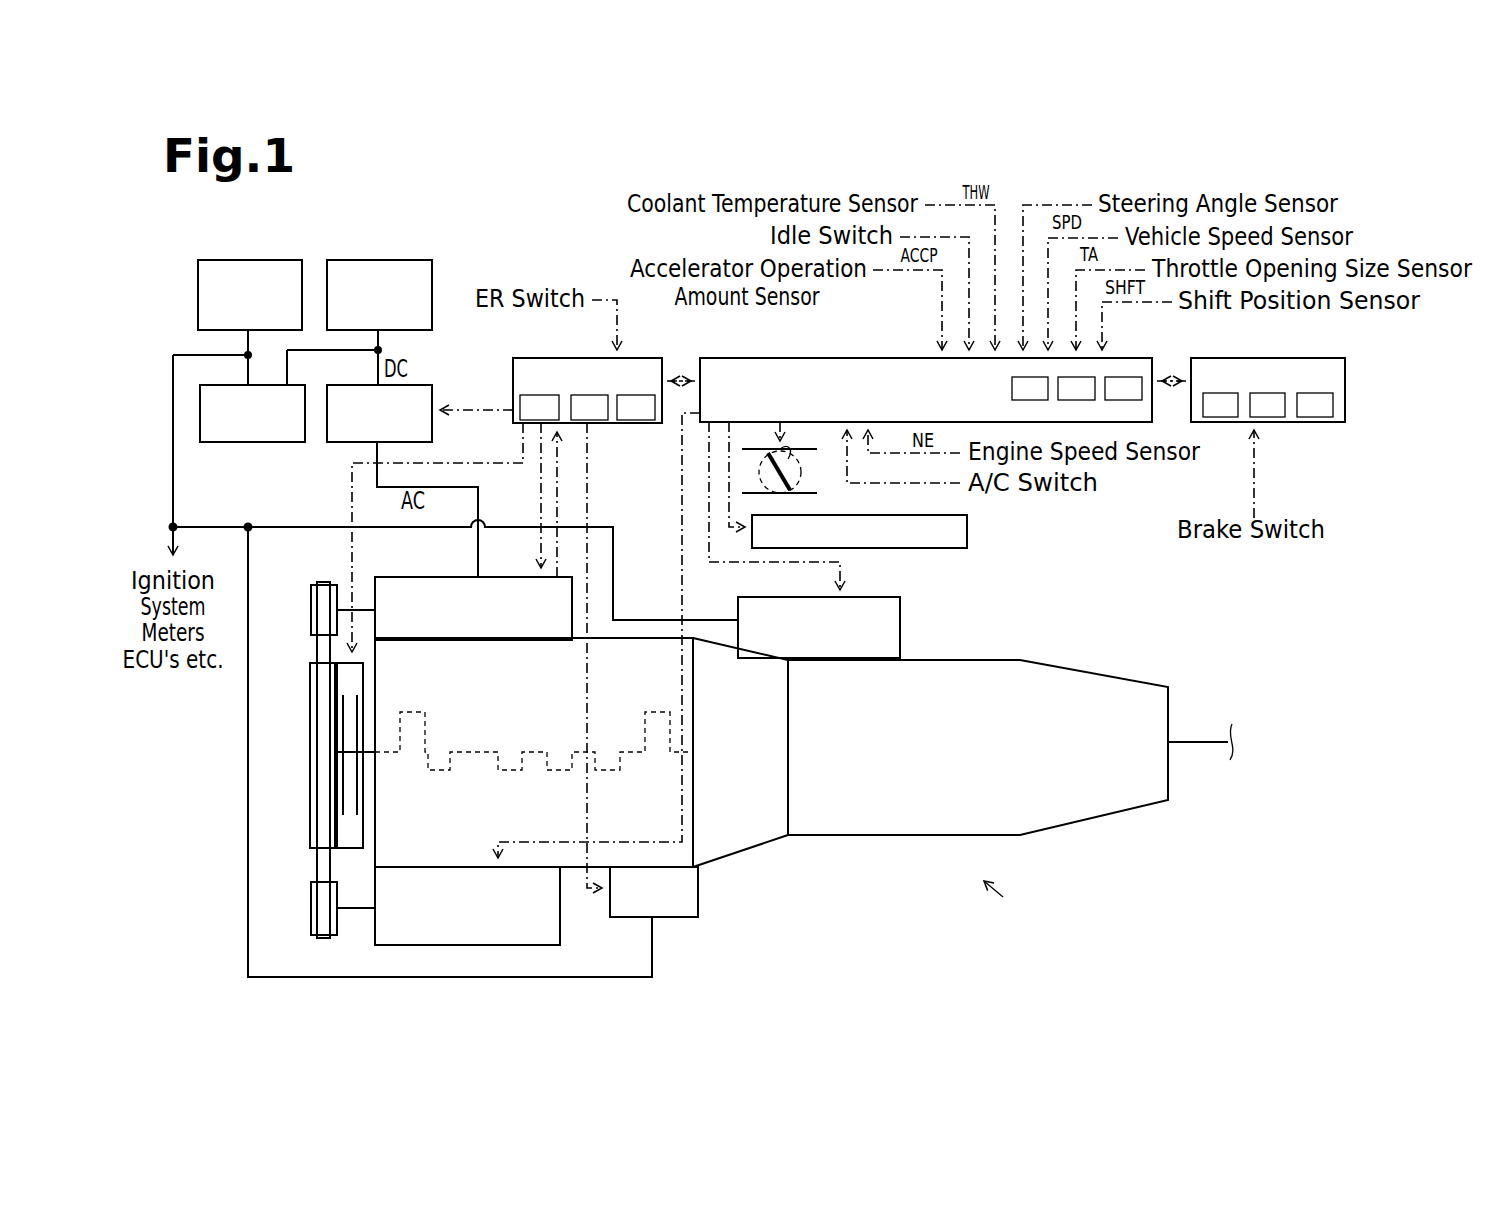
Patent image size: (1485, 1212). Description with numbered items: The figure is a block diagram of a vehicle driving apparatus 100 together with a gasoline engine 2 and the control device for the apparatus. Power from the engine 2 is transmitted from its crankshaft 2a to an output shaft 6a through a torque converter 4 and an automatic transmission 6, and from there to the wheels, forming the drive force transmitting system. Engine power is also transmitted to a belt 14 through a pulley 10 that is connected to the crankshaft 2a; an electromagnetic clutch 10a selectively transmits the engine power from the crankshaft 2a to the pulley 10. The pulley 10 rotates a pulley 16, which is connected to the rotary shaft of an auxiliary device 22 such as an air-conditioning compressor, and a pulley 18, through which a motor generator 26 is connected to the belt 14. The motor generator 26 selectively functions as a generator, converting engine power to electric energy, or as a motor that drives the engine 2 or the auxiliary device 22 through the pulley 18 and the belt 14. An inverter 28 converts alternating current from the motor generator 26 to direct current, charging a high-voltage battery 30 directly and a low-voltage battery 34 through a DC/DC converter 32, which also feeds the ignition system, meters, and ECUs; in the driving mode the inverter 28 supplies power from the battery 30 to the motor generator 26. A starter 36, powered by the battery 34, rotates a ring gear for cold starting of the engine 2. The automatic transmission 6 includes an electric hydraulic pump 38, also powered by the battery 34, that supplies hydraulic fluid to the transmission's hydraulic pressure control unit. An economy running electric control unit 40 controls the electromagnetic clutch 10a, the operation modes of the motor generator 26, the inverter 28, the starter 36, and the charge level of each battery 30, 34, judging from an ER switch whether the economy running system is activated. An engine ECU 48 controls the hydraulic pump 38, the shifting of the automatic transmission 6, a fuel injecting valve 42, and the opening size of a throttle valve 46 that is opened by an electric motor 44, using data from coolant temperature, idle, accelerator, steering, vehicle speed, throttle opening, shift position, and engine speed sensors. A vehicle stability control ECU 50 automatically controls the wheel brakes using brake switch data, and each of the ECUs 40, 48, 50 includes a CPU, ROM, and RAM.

The engine 2 is at (572, 868).
The crankshaft 2a is at (430, 762).
The torque converter 4 is at (740, 850).
The automatic transmission 6 is at (910, 837).
The output shaft 6a is at (1200, 745).
The pulley 10 is at (310, 752).
The electromagnetic clutch 10a is at (345, 850).
The belt 14 is at (317, 867).
The pulley 16 is at (311, 908).
The pulley 18 is at (311, 607).
The auxiliary device 22 is at (420, 946).
The motor generator 26 is at (458, 577).
The inverter 28 is at (337, 443).
The battery 30 is at (380, 258).
The DC/DC converter 32 is at (248, 443).
The battery 34 is at (250, 258).
The starter 36 is at (672, 917).
The electric hydraulic pump 38 is at (900, 627).
The economy running electric control unit 40 is at (548, 358).
The fuel injecting valve 42 is at (967, 540).
The electric motor 44 is at (803, 473).
The throttle valve 46 is at (783, 450).
The engine ECU 48 is at (748, 358).
The vehicle stability control ECU 50 is at (1303, 422).
The vehicle driving apparatus 100 is at (1021, 901).